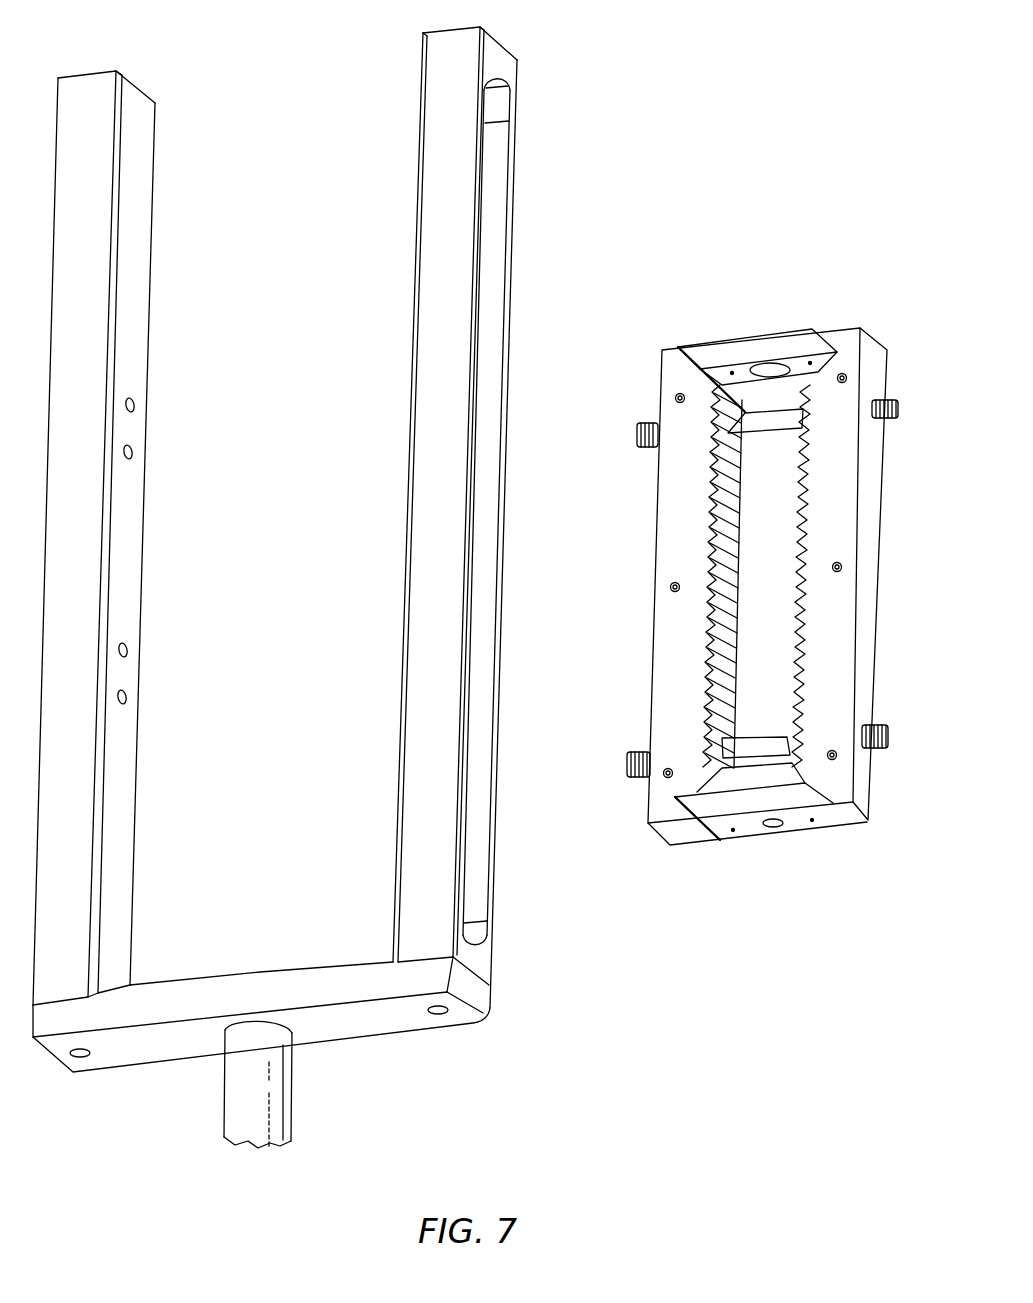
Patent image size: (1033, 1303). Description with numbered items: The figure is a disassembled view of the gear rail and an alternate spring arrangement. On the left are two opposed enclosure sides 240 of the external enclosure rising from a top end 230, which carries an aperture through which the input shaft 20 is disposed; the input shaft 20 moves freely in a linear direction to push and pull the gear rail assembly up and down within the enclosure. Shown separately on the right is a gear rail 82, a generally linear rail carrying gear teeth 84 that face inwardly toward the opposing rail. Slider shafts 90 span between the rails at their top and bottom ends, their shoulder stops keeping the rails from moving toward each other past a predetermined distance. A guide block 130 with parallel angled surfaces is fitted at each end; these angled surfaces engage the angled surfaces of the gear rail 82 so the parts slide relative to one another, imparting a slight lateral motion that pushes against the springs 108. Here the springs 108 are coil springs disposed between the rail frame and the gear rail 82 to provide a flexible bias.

The enclosure side 240 is at (126, 238).
The top end 230 is at (160, 1043).
The input shaft 20 is at (277, 1115).
The gear rail 82 is at (851, 467).
The guide block 130 is at (756, 343).
The slider shaft 90 is at (773, 428).
The gear teeth 84 is at (746, 514).
The spring 108 is at (896, 404).